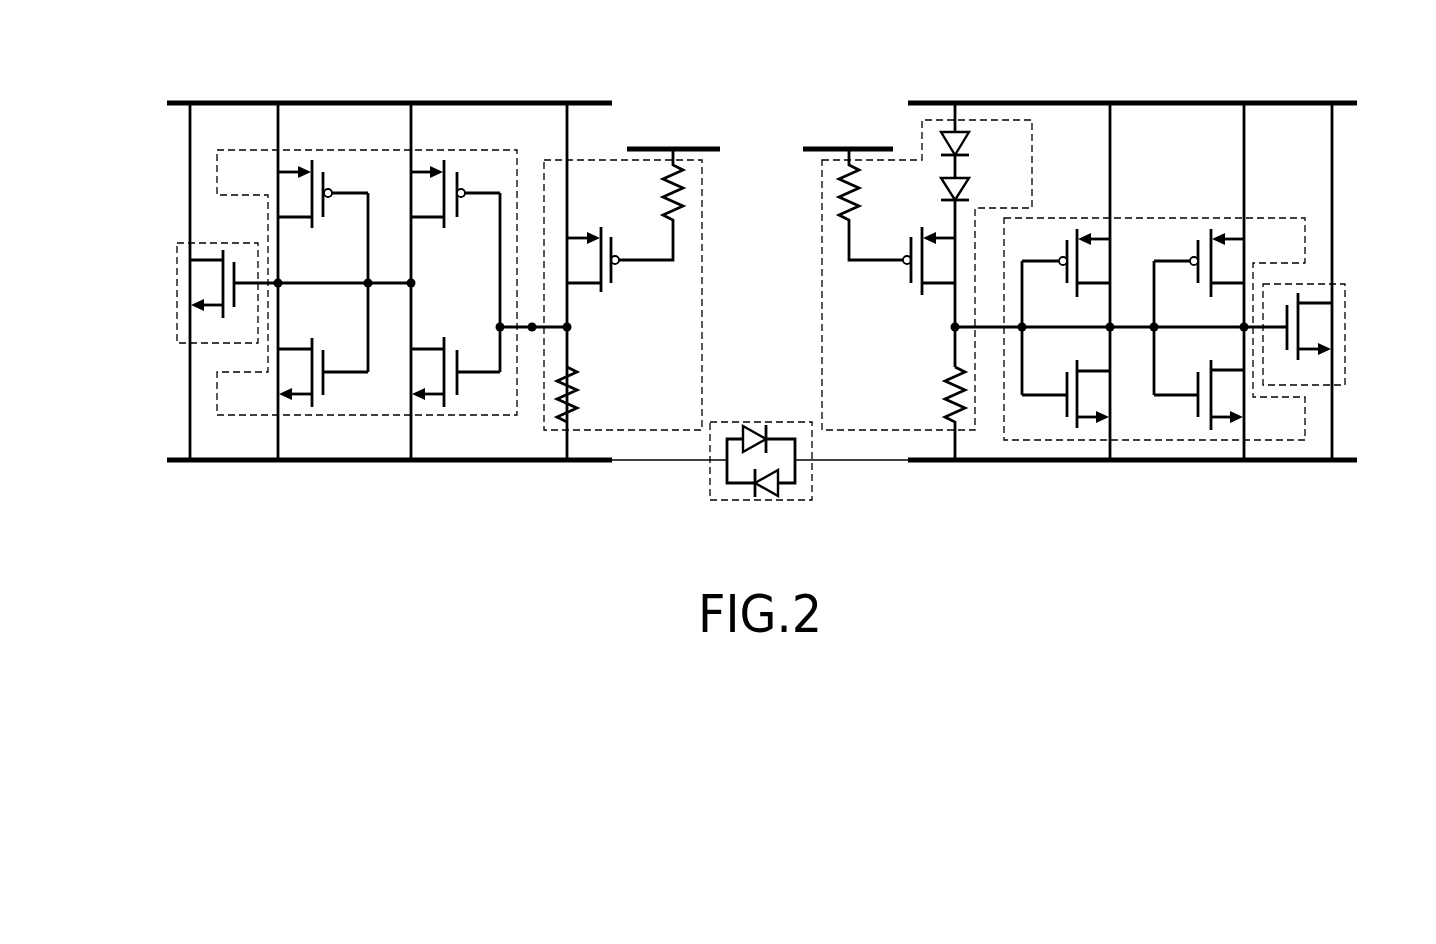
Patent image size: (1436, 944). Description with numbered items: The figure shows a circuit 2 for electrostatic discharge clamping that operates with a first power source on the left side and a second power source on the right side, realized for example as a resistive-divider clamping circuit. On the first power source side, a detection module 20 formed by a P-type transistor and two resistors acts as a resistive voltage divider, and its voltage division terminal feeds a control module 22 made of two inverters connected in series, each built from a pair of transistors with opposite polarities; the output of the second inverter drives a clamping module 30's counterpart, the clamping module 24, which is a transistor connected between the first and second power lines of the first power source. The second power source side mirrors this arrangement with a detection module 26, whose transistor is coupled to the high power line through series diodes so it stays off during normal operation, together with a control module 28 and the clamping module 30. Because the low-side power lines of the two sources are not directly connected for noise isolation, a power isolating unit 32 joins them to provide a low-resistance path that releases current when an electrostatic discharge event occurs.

The circuit for electrostatic discharge clamping 2 is at (153, 29).
The detection module 20 is at (702, 257).
The control module 22 is at (345, 150).
The clamping module 24 is at (177, 265).
The detection module 26 is at (822, 253).
The control module 28 is at (1172, 218).
The clamping module 30 is at (1345, 318).
The power isolating unit 32 is at (731, 500).